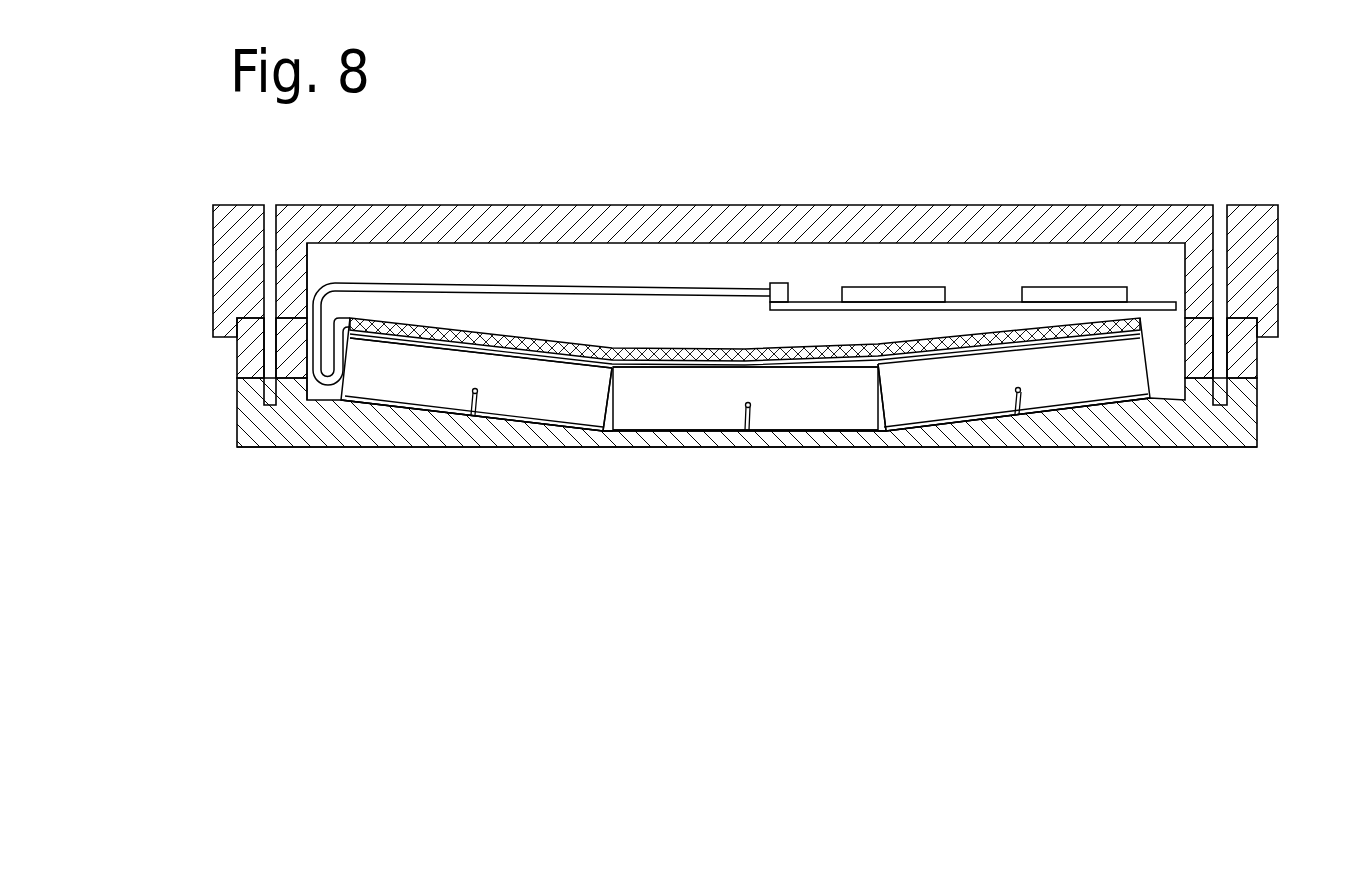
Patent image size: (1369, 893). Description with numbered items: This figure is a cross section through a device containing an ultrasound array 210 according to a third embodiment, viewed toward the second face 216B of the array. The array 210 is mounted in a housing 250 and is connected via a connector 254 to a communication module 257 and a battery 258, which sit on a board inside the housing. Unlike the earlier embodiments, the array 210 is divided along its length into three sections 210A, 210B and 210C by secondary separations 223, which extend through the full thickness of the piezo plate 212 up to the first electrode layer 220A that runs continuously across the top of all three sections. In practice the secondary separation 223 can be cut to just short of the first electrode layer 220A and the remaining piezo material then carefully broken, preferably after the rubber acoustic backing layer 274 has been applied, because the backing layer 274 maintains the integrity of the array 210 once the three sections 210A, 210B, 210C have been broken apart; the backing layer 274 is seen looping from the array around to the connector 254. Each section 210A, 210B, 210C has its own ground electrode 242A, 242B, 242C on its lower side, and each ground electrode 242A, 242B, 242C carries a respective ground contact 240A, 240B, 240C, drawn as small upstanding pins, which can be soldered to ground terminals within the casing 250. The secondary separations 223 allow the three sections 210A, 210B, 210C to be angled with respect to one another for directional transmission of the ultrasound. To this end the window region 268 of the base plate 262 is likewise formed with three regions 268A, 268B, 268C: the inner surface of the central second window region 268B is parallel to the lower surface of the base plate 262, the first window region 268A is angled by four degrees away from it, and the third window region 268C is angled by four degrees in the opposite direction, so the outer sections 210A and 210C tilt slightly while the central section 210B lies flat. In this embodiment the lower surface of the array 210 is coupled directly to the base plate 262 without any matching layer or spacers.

The housing 250 is at (690, 205).
The base plate 262 is at (237, 397).
The array 210 is at (706, 404).
The window region 268 is at (358, 445).
The first window region 268A is at (603, 433).
The second window region 268B is at (798, 433).
The third window region 268C is at (1096, 407).
The first section 210A is at (476, 443).
The second section 210B is at (763, 468).
The third section 210C is at (1045, 439).
The plate 212 is at (382, 378).
The second face 216B is at (701, 405).
The secondary separations 223 is at (883, 432).
The ground contact 240A is at (465, 408).
The ground contact 240B is at (740, 432).
The ground contact 240C is at (1022, 413).
The ground electrode 242A is at (503, 422).
The ground electrode 242B is at (665, 433).
The ground electrode 242C is at (953, 425).
The first electrode layer 220A is at (553, 343).
The rubber acoustic backing layer 274 is at (433, 323).
The connector 254 is at (775, 283).
The communication module 257 is at (880, 287).
The battery 258 is at (1058, 287).